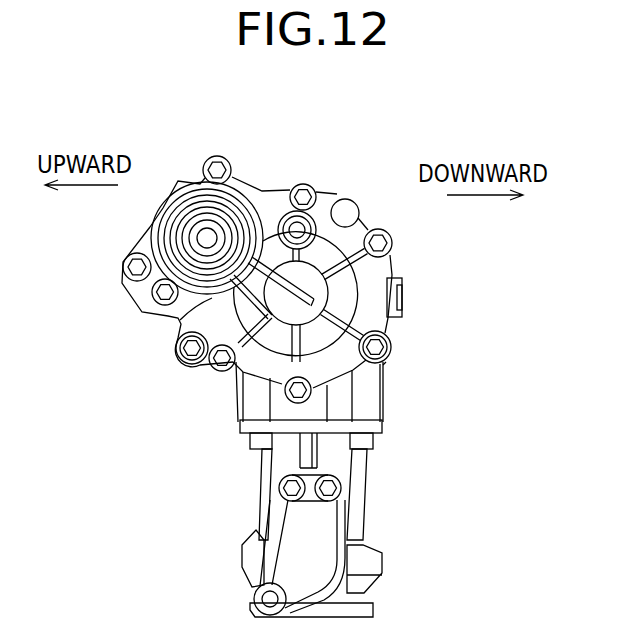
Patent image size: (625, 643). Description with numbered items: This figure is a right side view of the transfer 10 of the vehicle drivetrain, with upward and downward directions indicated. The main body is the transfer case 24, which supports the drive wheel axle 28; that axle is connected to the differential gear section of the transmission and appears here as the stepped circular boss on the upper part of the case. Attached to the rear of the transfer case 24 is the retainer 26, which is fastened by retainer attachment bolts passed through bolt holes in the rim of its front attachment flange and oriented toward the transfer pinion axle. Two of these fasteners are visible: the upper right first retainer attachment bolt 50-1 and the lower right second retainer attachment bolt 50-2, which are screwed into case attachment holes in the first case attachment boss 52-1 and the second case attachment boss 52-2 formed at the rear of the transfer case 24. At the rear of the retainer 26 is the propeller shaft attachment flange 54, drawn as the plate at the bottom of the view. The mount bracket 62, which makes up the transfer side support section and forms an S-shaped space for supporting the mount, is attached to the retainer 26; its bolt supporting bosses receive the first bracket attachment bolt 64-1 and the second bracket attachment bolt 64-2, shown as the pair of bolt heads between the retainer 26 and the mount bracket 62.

The transfer 10 is at (410, 144).
The transfer case 24 is at (335, 194).
The retainer 26 is at (366, 510).
The drive wheel axle 28 is at (207, 238).
The NO. 1 retainer attachment bolt 50-1 is at (253, 445).
The NO. 2 retainer attachment bolt 50-2 is at (375, 448).
The NO. 1 case attachment boss 52-1 is at (257, 397).
The NO. 2 case attachment boss 52-2 is at (365, 397).
The propeller shaft attachment flange 54 is at (363, 610).
The mount bracket 62 is at (253, 575).
The NO. 1 bracket attachment bolt 64-1 is at (279, 490).
The NO. 2 bracket attachment bolt 64-2 is at (341, 488).